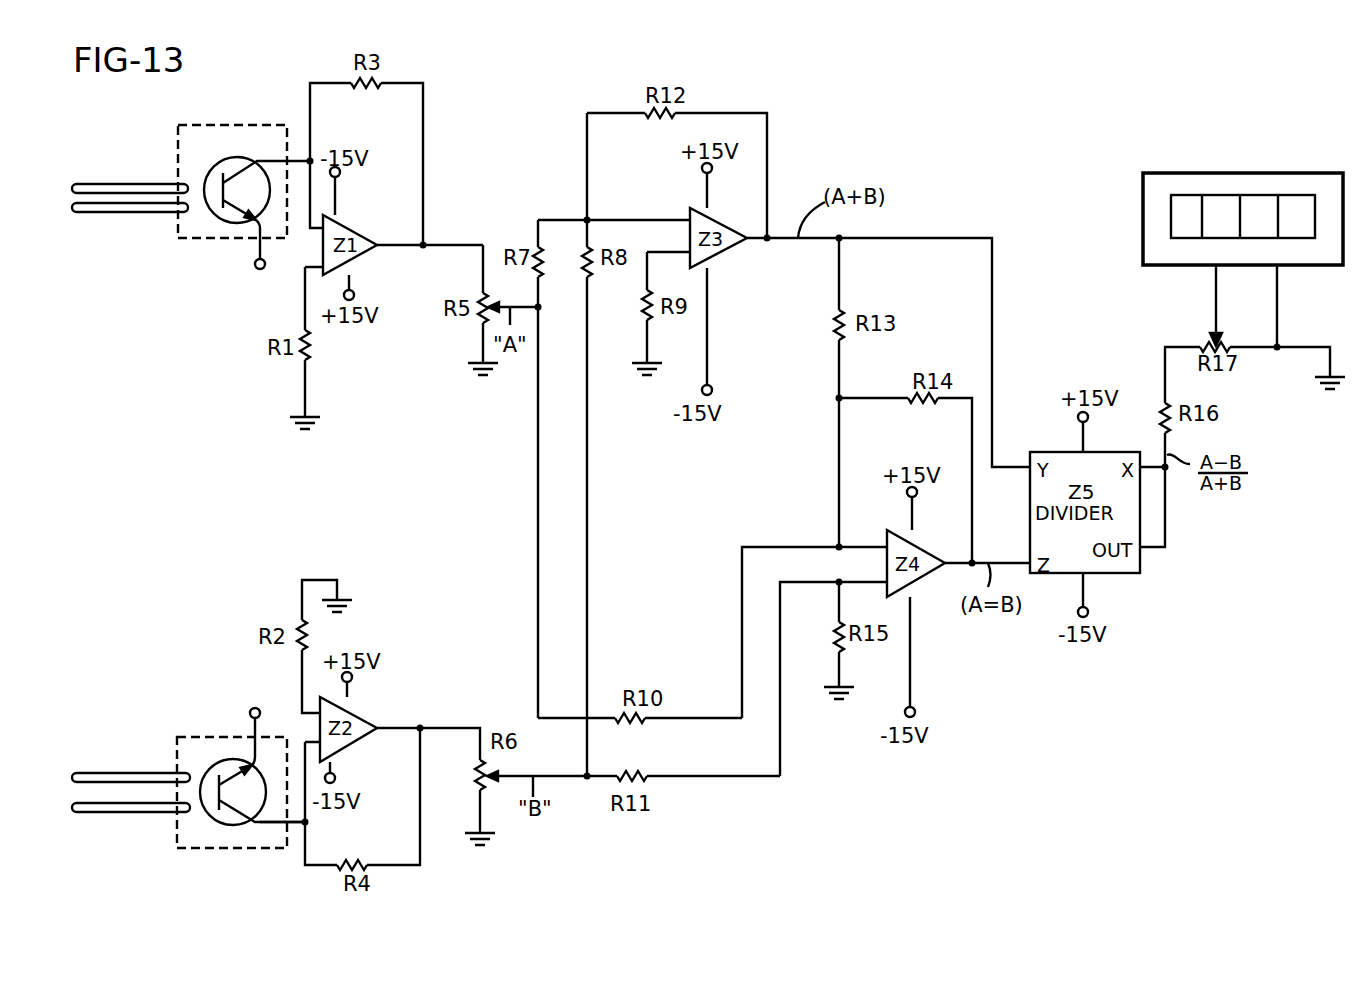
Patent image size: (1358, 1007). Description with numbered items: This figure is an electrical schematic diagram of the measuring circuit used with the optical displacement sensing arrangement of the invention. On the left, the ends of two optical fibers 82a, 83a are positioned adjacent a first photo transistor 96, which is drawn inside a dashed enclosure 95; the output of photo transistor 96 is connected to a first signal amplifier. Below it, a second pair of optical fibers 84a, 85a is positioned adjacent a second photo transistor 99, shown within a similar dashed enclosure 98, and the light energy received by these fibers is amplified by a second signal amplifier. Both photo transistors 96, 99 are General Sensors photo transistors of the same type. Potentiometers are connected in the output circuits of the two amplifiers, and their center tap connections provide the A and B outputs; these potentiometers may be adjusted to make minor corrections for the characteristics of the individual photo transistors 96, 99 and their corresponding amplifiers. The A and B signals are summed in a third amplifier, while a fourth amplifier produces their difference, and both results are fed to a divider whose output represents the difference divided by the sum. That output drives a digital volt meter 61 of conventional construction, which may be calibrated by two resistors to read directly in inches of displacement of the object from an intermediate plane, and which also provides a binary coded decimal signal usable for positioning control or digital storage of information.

The digital volt meter 61 is at (1160, 178).
The optical fiber 82a is at (155, 184).
The optical fiber 83a is at (155, 212).
The optical fiber 84a is at (135, 773).
The optical fiber 85a is at (147, 812).
The first photodetector package 95 is at (193, 124).
The photo transistor 96 is at (243, 157).
The second photodetector package 98 is at (200, 736).
The photo transistor 99 is at (228, 826).